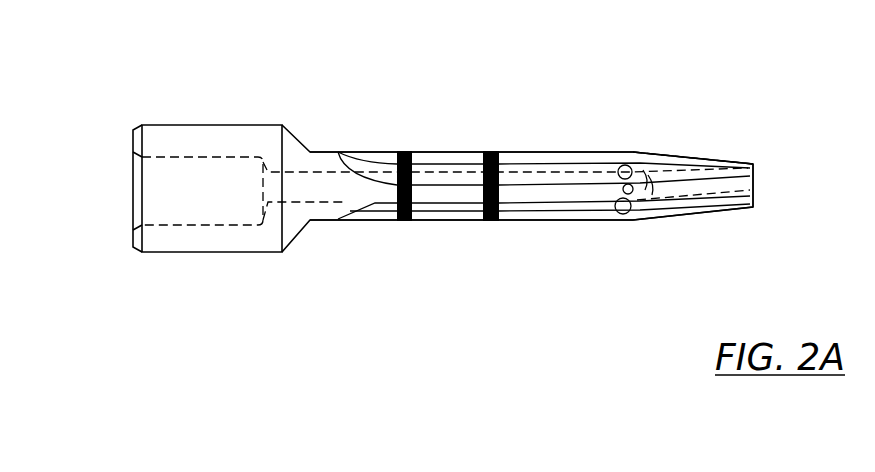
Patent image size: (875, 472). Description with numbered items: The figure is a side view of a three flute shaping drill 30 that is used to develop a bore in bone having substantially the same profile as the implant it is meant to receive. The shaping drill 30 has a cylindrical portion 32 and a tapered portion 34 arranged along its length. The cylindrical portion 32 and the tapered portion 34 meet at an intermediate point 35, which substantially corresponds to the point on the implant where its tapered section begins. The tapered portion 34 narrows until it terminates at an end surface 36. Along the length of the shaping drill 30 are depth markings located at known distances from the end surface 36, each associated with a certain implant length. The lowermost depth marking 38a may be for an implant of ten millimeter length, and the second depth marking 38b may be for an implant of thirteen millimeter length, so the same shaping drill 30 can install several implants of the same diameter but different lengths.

The shaping drill 30 is at (230, 317).
The cylindrical portion 32 is at (450, 151).
The tapered portion 34 is at (700, 212).
The intermediate point 35 is at (645, 150).
The end surface 36 is at (755, 165).
The lowermost depth marking 38a is at (405, 221).
The second depth marking 38b is at (492, 221).